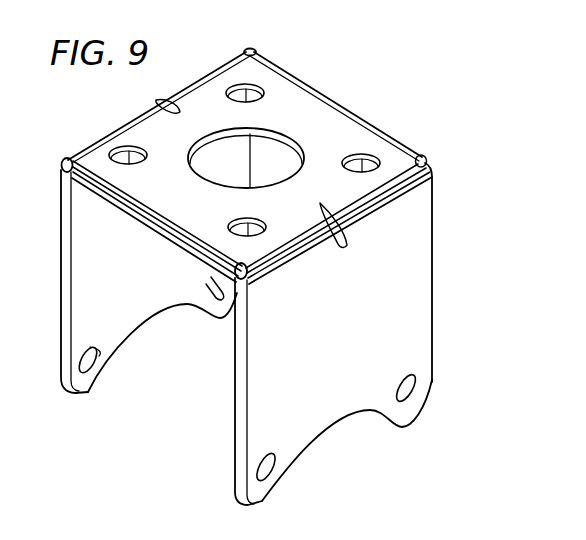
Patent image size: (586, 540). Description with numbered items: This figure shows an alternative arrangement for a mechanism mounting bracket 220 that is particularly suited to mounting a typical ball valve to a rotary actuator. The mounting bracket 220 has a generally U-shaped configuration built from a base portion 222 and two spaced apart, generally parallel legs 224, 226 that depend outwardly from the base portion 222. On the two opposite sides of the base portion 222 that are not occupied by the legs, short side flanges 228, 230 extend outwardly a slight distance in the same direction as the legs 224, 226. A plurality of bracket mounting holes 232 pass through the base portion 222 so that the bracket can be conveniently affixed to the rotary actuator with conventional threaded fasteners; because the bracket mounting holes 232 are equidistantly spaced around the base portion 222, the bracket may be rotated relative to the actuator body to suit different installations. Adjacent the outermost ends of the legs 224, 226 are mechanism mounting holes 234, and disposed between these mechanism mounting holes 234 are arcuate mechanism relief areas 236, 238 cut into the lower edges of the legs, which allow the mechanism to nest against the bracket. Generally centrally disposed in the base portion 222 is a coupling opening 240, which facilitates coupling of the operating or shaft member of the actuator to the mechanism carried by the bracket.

The mounting bracket 220 is at (368, 63).
The base portion 222 is at (343, 136).
The leg 224 is at (78, 237).
The leg 226 is at (412, 273).
The side flange 228 is at (167, 237).
The side flange 230 is at (418, 155).
The bracket mounting holes 232 is at (113, 152).
The mechanism mounting holes 234 is at (92, 366).
The arcuate mechanism relief area 236 is at (147, 313).
The arcuate mechanism relief area 238 is at (337, 423).
The coupling opening 240 is at (233, 187).